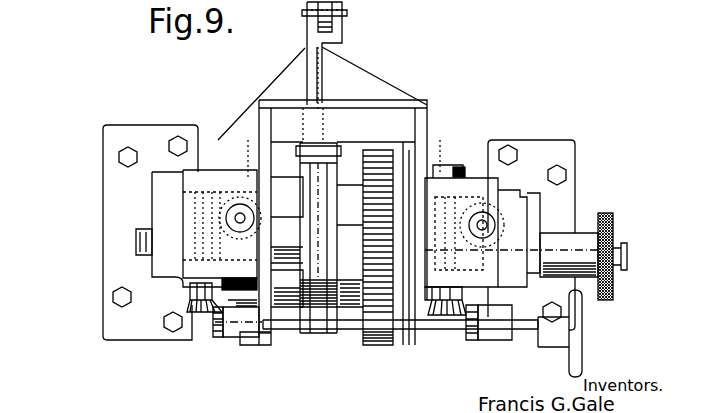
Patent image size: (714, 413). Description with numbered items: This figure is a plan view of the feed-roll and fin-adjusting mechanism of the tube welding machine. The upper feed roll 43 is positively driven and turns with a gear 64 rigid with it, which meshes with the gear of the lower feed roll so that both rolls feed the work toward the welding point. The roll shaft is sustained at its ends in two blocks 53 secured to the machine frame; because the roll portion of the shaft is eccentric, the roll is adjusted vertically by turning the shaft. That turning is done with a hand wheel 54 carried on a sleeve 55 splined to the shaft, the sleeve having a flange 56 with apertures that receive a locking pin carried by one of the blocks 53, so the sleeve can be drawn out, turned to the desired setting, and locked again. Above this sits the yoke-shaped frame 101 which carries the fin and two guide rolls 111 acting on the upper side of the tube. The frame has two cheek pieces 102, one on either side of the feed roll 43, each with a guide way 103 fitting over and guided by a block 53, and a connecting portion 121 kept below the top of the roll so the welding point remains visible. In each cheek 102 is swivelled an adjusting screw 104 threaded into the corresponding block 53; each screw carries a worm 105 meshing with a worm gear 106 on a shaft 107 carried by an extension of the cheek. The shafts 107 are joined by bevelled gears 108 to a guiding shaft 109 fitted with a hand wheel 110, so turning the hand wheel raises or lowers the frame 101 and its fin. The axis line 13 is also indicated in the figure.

The shaft axis / gear 13 is at (420, 247).
The upper feed roll 43 is at (303, 330).
The block 53 is at (163, 133).
The hand wheel 54 is at (613, 213).
The sleeve 55 is at (578, 229).
The flange 56 is at (540, 197).
The gear 64 is at (352, 333).
The yoke-shaped frame 101 is at (358, 79).
The cheek piece 102 is at (262, 132).
The guide way 103 is at (249, 140).
The adjusting screw 104 is at (239, 217).
The worm 105 is at (250, 198).
The worm gear 106 is at (157, 198).
The shaft 107 is at (150, 270).
The bevelled gears 108 is at (220, 317).
The guiding shaft 109 is at (282, 328).
The hand wheel 110 is at (583, 345).
The guide rolls 111 is at (326, 107).
The connecting portion 121 is at (380, 110).